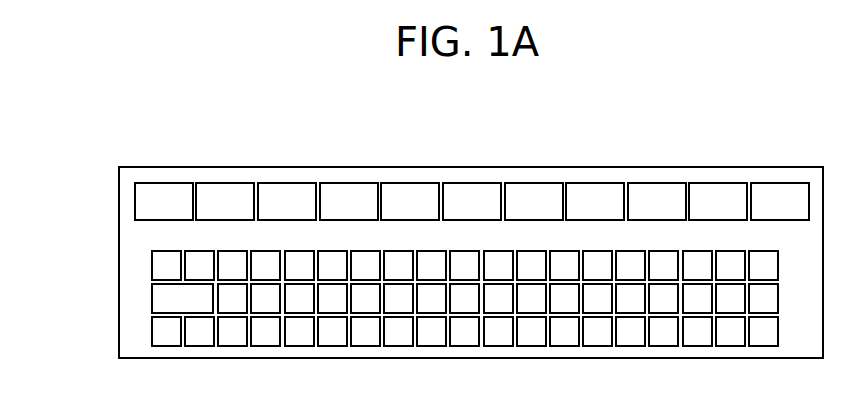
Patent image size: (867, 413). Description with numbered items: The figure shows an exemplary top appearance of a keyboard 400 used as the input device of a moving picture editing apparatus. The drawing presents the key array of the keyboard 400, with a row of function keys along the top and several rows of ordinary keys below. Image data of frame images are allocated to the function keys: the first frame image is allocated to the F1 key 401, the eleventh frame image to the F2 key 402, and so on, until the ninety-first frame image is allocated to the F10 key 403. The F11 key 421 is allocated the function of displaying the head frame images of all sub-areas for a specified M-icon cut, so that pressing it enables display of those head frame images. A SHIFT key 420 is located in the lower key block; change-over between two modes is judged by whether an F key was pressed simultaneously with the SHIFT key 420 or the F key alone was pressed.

The keyboard 400 is at (563, 166).
The F1 key 401 is at (160, 182).
The F2 key 402 is at (237, 182).
The F10 key 403 is at (707, 182).
The F11 key 421 is at (791, 182).
The SHIFT key 420 is at (152, 298).